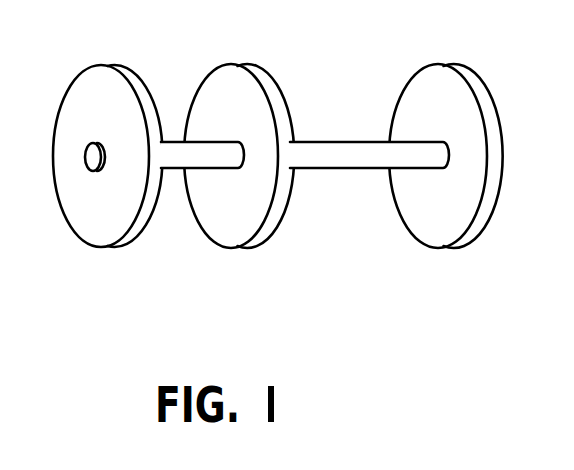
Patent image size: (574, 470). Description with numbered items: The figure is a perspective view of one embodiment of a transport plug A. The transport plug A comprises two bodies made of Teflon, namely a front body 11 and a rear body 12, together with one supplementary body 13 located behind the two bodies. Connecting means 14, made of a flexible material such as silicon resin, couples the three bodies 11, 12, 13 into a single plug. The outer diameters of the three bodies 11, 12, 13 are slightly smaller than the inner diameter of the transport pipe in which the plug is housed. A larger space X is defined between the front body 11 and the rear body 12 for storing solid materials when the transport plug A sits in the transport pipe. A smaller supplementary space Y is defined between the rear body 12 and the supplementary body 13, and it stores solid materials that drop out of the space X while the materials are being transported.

The transport plug A is at (91, 49).
The front body 11 is at (435, 230).
The rear body 12 is at (223, 222).
The supplementary body 13 is at (108, 215).
The connecting means 14 is at (318, 150).
The larger space X is at (325, 173).
The smaller supplementary space Y is at (175, 185).